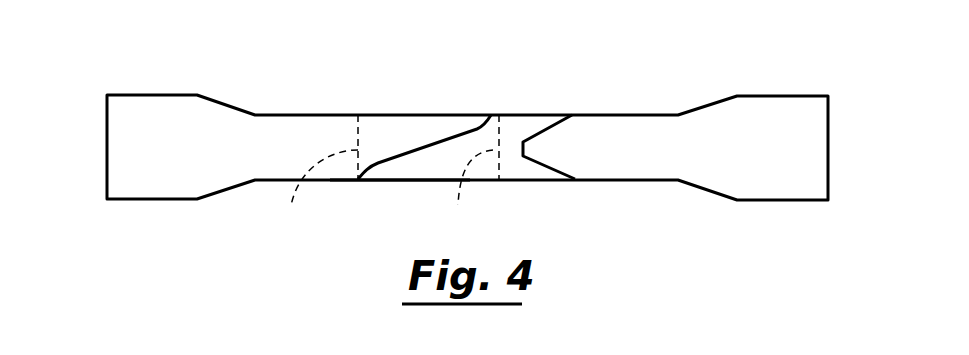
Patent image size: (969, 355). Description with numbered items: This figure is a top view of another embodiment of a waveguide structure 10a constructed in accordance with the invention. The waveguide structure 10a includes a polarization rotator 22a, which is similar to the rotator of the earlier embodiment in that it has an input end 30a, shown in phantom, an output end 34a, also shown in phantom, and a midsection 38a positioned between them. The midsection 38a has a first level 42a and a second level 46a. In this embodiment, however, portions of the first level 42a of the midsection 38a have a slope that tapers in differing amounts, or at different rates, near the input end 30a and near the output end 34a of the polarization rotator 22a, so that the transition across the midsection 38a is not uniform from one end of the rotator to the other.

The waveguide structure 10a is at (547, 60).
The polarization rotator 22a is at (499, 103).
The input end 30a is at (319, 192).
The output end 34a is at (470, 191).
The midsection 38a is at (406, 189).
The first level 42a is at (396, 125).
The second level 46a is at (487, 138).